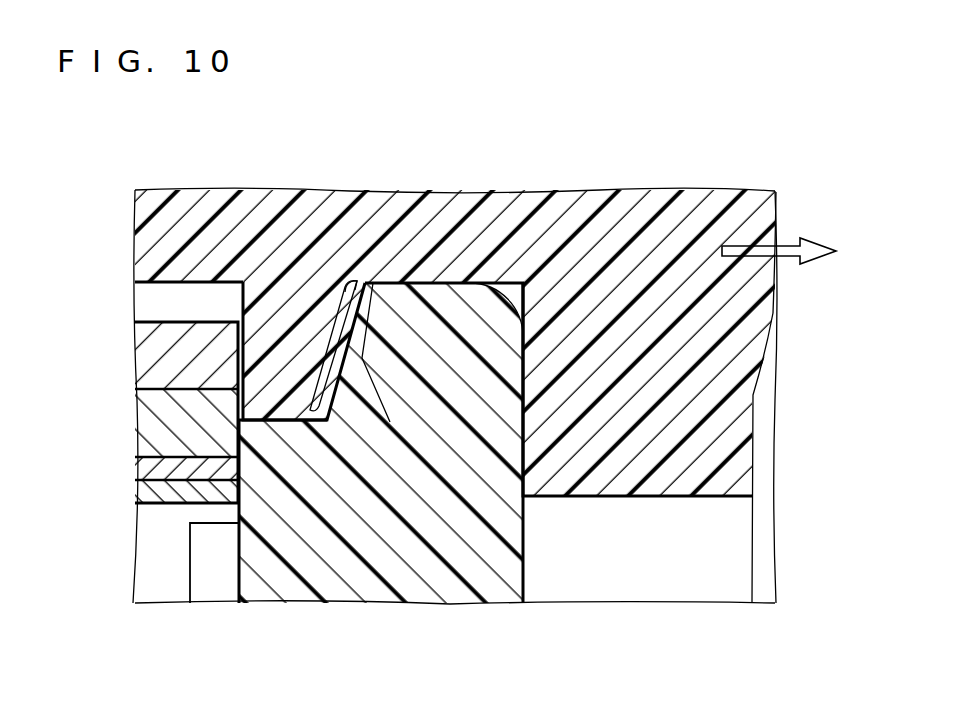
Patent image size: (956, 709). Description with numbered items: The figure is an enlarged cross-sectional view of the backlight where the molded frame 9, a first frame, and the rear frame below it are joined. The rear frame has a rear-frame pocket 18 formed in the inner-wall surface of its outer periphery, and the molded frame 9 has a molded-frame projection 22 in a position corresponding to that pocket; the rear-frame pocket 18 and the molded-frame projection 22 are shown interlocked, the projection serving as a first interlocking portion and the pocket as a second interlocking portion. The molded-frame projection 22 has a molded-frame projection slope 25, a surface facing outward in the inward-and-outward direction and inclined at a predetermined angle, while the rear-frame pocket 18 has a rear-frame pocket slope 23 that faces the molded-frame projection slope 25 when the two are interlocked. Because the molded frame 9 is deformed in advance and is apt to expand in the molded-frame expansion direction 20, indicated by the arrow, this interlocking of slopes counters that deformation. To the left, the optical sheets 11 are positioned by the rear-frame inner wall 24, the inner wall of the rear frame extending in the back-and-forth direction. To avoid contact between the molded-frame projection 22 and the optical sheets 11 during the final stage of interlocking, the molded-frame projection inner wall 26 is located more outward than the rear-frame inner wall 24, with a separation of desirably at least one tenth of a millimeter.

The molded frame 9 is at (634, 240).
The optical sheets 11 is at (123, 322).
The rear-frame pocket 18 is at (280, 420).
The molded-frame expansion direction 20 is at (779, 277).
The molded-frame projection 22 is at (300, 290).
The rear-frame pocket slope 23 is at (390, 422).
The rear-frame inner wall 24 is at (235, 572).
The molded-frame projection slope 25 is at (322, 345).
The molded-frame projection inner wall 26 is at (338, 335).